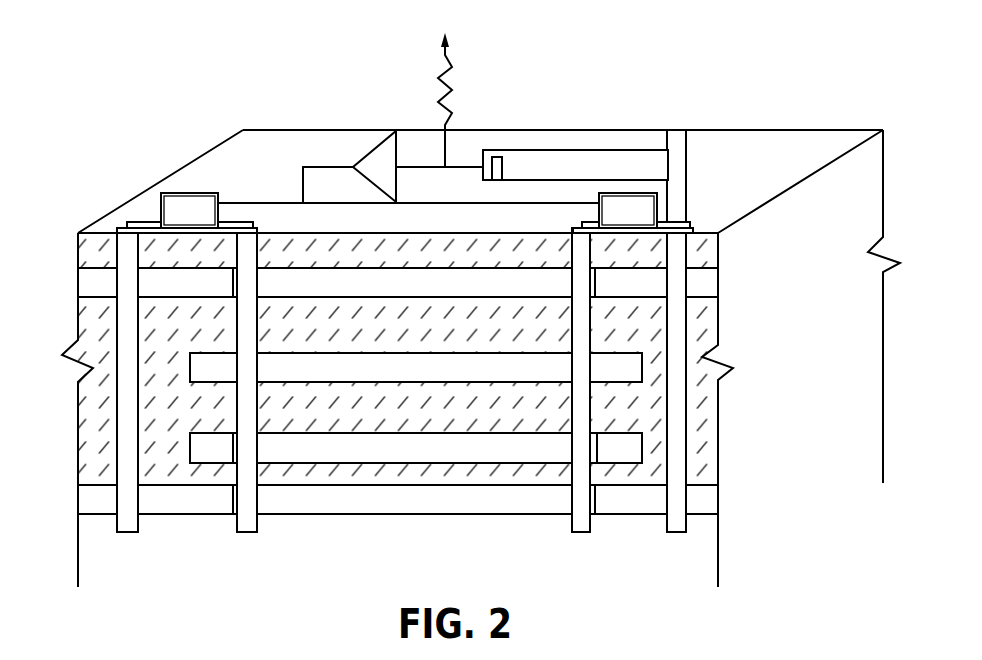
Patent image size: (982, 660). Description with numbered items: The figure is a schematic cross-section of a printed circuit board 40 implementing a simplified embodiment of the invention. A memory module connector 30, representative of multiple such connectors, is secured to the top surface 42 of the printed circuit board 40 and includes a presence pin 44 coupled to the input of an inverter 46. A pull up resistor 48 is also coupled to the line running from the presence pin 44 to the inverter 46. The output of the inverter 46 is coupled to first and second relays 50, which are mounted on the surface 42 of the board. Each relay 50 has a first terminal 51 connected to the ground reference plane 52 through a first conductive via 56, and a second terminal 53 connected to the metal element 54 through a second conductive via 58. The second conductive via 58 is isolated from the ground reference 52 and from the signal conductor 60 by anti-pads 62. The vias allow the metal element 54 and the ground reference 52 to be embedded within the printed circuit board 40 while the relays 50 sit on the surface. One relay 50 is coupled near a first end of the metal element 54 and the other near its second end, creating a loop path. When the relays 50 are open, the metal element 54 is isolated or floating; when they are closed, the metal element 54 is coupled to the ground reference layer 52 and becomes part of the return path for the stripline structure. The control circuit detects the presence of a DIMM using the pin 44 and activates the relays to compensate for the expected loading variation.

The memory module connector 30 is at (615, 152).
The printed circuit board 40 is at (88, 138).
The top surface 42 is at (233, 155).
The presence pin 44 is at (497, 158).
The inverter 46 is at (381, 155).
The pull up resistor 48 is at (445, 78).
The relay 50 is at (190, 193).
The first terminal 51 is at (160, 226).
The ground reference plane 52 is at (707, 281).
The second terminal 53 is at (220, 220).
The metal element 54 is at (625, 367).
The first conductive via 56 is at (125, 368).
The second conductive via 58 is at (247, 321).
The signal conductor 60 is at (632, 445).
The anti-pad 62 is at (263, 281).